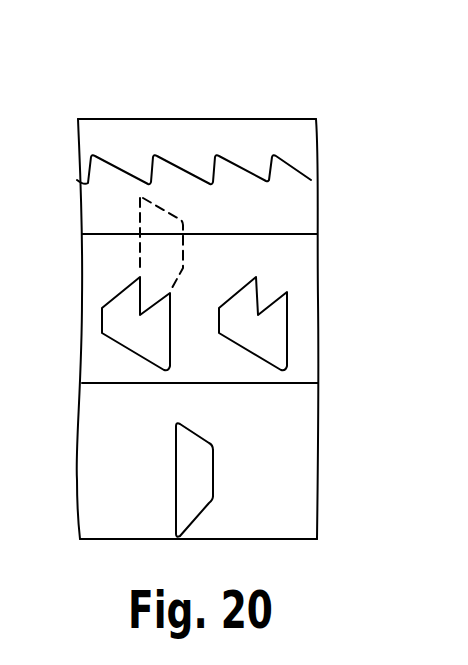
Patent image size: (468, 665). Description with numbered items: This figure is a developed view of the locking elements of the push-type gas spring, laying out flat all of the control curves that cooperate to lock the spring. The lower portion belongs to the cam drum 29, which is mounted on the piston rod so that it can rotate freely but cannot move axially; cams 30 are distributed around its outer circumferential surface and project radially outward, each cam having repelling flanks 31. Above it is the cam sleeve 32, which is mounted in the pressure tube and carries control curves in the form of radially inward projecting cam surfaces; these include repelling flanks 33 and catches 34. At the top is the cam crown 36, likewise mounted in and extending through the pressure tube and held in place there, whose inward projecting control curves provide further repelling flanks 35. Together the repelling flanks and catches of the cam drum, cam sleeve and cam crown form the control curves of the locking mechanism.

The cam drum 29 is at (302, 520).
The cams 30 is at (188, 482).
The repelling flanks 31 is at (210, 443).
The cam sleeve 32 is at (300, 357).
The repelling flanks 33 is at (113, 299).
The catches 34 is at (273, 283).
The repelling flanks 35 is at (243, 175).
The cam crown 36 is at (240, 133).